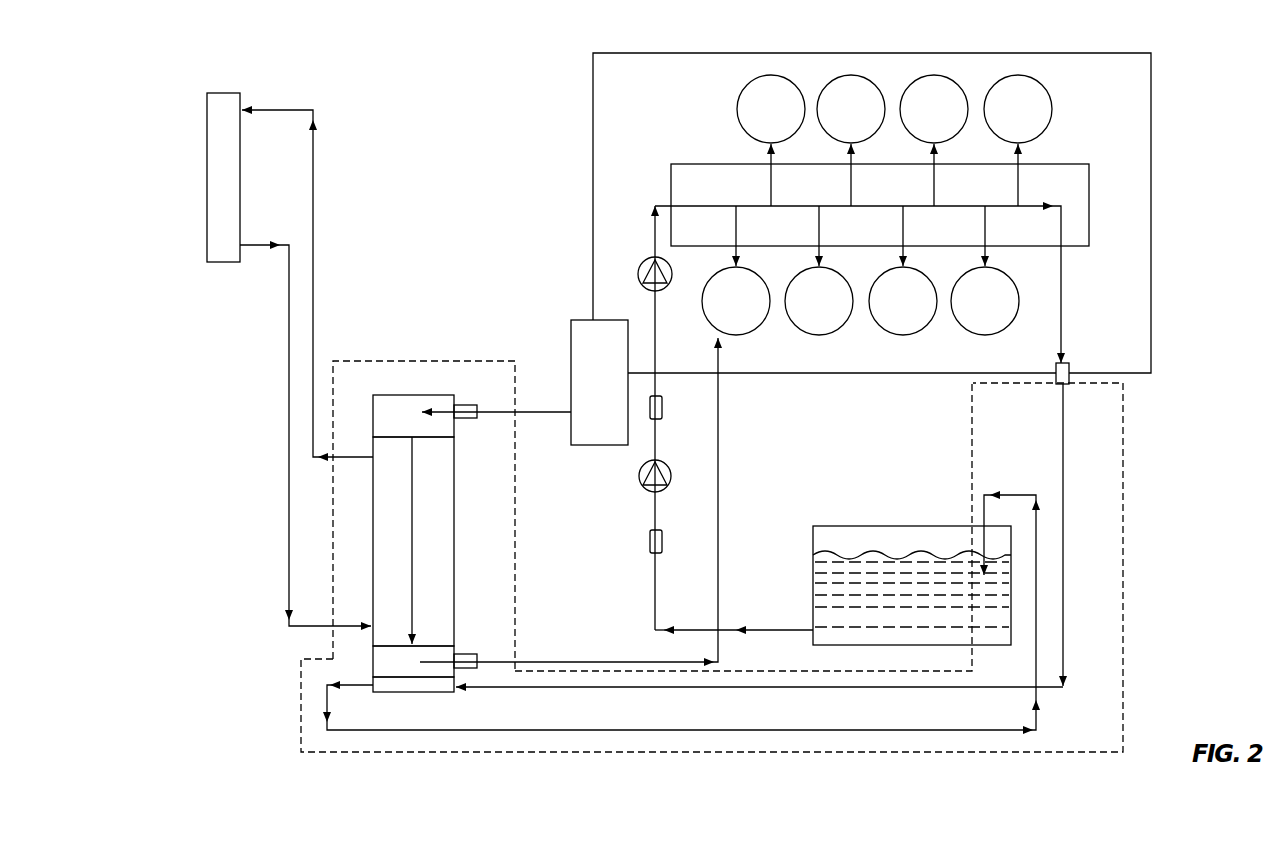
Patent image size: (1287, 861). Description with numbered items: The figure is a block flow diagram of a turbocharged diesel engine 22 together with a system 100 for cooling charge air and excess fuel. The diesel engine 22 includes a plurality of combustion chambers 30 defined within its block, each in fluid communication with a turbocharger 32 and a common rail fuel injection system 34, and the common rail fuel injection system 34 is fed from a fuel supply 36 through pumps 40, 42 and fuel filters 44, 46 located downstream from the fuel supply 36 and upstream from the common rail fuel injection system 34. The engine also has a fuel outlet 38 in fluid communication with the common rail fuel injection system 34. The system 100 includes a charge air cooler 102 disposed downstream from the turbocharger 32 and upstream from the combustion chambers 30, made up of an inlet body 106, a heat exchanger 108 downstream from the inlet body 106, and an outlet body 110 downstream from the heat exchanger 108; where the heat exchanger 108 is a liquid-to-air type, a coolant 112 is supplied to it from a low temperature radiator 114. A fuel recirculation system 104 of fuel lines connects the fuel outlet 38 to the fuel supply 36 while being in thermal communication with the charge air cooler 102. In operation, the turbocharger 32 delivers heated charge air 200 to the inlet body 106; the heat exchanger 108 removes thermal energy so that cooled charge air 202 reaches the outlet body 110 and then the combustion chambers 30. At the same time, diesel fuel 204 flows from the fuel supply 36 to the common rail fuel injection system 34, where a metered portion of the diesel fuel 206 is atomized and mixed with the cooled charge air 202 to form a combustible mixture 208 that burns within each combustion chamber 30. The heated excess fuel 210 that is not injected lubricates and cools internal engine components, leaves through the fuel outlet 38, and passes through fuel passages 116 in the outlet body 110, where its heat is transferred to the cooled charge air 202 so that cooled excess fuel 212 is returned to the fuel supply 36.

The diesel engine 22 is at (1050, 50).
The combustion chambers 30 is at (738, 100).
The turbocharger 32 is at (587, 387).
The common rail fuel injection system 34 is at (1069, 164).
The fuel supply 36 is at (888, 604).
The fuel outlet 38 is at (1070, 370).
The pump 40 is at (674, 464).
The pump 42 is at (641, 265).
The fuel filter 44 is at (663, 538).
The fuel filter 46 is at (663, 401).
The system 100 is at (417, 360).
The charge air cooler 102 is at (483, 530).
The fuel recirculation system 104 is at (622, 740).
The inlet body 106 is at (420, 395).
The heat exchanger 108 is at (456, 550).
The outlet body 110 is at (437, 693).
The coolant 112 is at (314, 236).
The low temperature radiator 114 is at (205, 172).
The fuel passages 116 is at (373, 683).
The heated charge air 200 is at (505, 410).
The cooled charge air 202 is at (722, 448).
The diesel fuel 204 is at (662, 203).
The metered portion of the diesel fuel 206 is at (772, 176).
The combustible mixture 208 is at (753, 123).
The heated excess fuel 210 is at (891, 209).
The cooled excess fuel 212 is at (1008, 493).